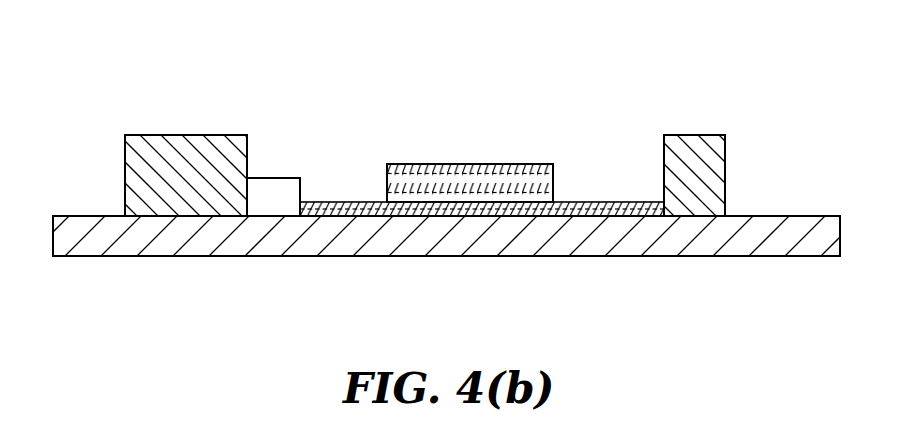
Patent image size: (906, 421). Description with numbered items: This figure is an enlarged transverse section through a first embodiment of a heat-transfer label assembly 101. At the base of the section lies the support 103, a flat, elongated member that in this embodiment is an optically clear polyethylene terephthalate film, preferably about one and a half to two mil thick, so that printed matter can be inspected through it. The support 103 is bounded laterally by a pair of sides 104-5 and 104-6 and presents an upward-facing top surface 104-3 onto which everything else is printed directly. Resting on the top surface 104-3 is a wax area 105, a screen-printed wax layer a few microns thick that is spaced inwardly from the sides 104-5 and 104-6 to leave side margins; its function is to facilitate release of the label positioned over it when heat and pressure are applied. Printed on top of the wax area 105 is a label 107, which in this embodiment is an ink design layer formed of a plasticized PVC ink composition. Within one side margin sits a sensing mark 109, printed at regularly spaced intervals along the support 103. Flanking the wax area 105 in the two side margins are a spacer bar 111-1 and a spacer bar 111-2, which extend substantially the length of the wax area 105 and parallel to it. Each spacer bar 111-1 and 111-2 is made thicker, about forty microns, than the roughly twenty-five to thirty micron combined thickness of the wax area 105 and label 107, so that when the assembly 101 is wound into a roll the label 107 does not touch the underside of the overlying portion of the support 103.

The heat-transfer label assembly 101 is at (413, 60).
The support 103 is at (647, 240).
The top surface 104-3 is at (778, 215).
The side 104-5 is at (840, 243).
The side 104-6 is at (54, 238).
The wax area 105 is at (340, 201).
The label 107 is at (480, 175).
The sensing mark 109 is at (268, 188).
The spacer bar 111-1 is at (687, 142).
The spacer bar 111-2 is at (198, 148).